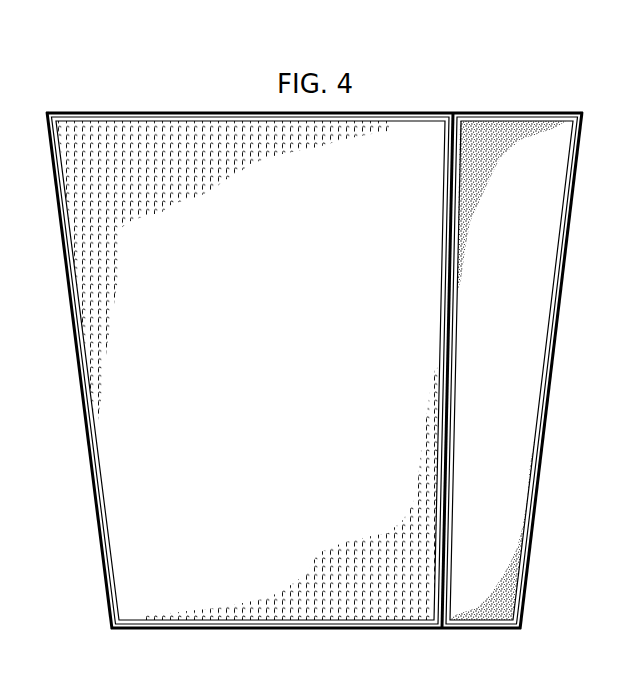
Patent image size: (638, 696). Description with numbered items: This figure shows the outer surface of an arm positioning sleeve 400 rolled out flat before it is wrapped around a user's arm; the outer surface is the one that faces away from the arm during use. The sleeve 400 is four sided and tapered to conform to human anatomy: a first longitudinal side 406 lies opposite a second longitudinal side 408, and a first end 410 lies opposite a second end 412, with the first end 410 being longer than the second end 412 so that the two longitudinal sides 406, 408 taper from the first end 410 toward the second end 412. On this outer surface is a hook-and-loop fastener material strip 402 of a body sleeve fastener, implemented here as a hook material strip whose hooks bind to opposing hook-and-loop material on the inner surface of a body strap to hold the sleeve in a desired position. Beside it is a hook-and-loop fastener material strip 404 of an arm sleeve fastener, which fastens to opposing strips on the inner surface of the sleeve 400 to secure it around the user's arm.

The arm positioning sleeve 400 is at (503, 68).
The hook-and-loop fastener material strip 402 is at (256, 369).
The hook-and-loop fastener material strip 404 is at (478, 369).
The first longitudinal side 406 is at (538, 538).
The second longitudinal side 408 is at (102, 552).
The first end 410 is at (162, 112).
The second end 412 is at (191, 630).